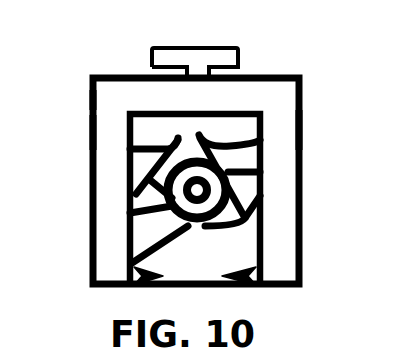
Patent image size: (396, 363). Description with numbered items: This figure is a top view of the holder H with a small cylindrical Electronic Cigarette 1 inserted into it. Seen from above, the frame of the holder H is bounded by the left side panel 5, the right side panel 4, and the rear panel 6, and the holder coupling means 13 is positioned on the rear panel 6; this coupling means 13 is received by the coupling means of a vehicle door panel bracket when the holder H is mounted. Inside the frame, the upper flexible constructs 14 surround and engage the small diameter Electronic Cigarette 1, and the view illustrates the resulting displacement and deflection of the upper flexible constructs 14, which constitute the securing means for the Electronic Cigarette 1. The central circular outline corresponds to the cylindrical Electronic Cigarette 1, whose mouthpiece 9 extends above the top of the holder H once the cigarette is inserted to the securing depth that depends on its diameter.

The small diameter Electronic Cigarette 1 is at (215, 191).
The right side panel 4 is at (278, 128).
The left side panel 5 is at (110, 128).
The rear panel 6 is at (253, 92).
The mouthpiece 9 is at (182, 194).
The holder coupling means 13 is at (162, 58).
The upper flexible constructs 14 is at (152, 165).
The holder H is at (108, 100).